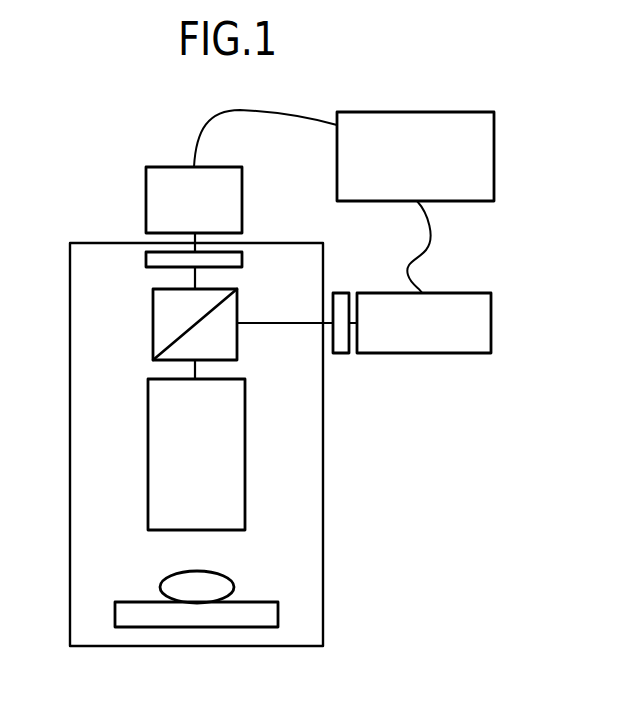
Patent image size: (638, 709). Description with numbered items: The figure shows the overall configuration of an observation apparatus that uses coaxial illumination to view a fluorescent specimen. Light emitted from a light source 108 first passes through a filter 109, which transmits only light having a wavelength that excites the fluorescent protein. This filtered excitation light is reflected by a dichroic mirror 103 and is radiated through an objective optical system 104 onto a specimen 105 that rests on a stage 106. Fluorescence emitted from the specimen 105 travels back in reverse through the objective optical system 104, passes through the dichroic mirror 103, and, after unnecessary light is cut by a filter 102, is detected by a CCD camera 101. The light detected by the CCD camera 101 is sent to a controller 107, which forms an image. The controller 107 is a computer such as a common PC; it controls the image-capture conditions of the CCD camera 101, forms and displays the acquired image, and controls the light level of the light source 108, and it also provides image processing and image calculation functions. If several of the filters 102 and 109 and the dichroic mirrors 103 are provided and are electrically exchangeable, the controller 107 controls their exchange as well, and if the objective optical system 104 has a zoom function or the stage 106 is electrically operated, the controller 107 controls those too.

The CCD camera 101 is at (168, 167).
The filter 102 is at (146, 260).
The dichroic mirror 103 is at (153, 323).
The objective optical system 104 is at (148, 403).
The specimen 105 is at (165, 579).
The stage 106 is at (278, 610).
The controller 107 is at (494, 152).
The light source 108 is at (491, 320).
The filter 109 is at (340, 353).